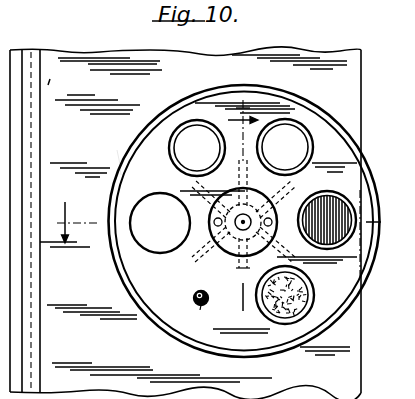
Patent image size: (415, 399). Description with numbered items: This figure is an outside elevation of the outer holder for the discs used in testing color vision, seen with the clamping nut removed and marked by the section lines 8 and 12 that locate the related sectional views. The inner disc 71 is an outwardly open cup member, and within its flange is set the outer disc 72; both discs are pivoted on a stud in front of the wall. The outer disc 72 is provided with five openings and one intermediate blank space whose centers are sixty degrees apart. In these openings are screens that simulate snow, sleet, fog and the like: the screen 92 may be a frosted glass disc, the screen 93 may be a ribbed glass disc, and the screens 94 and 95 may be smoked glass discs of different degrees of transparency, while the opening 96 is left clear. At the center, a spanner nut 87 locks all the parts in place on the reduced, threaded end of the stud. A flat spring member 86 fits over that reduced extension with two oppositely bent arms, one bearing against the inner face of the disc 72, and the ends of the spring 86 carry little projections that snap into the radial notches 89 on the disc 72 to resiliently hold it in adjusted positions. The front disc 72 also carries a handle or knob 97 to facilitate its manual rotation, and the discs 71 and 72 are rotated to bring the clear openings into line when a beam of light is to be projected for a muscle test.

The disc 72 is at (217, 90).
The section line 12- 12 is at (243, 213).
The disc 71 is at (121, 160).
The screen 95 is at (171, 152).
The screen 94 is at (311, 148).
The opening 96 is at (148, 252).
The screen 93 is at (352, 192).
The screen 92 is at (311, 289).
The spanner nut 87 is at (232, 262).
The radial notches 89 is at (222, 203).
The flat spring member 86 is at (216, 299).
The handle or knob 97 is at (232, 328).
The section line 8- 8 is at (211, 235).